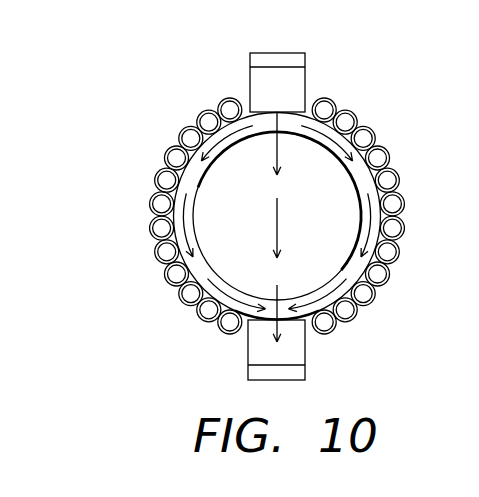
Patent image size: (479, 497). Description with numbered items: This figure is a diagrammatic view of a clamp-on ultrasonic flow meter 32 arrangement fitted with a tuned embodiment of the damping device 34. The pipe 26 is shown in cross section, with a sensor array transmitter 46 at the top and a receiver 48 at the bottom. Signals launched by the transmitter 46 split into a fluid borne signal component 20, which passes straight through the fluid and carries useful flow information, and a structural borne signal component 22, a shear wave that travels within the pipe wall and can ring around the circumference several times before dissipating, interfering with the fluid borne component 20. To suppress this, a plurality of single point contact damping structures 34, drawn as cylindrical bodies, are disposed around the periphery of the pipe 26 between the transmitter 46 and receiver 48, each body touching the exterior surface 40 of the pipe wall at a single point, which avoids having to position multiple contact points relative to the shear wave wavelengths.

The fluid borne signal component 20 is at (277, 226).
The structural borne signal component 22 is at (370, 221).
The pipe 26 is at (246, 322).
The ultrasonic flow meter 32 is at (207, 61).
The damping device 34 is at (386, 153).
The exterior surface 40 is at (313, 107).
The transmitter 46 is at (307, 53).
The receiver 48 is at (304, 378).